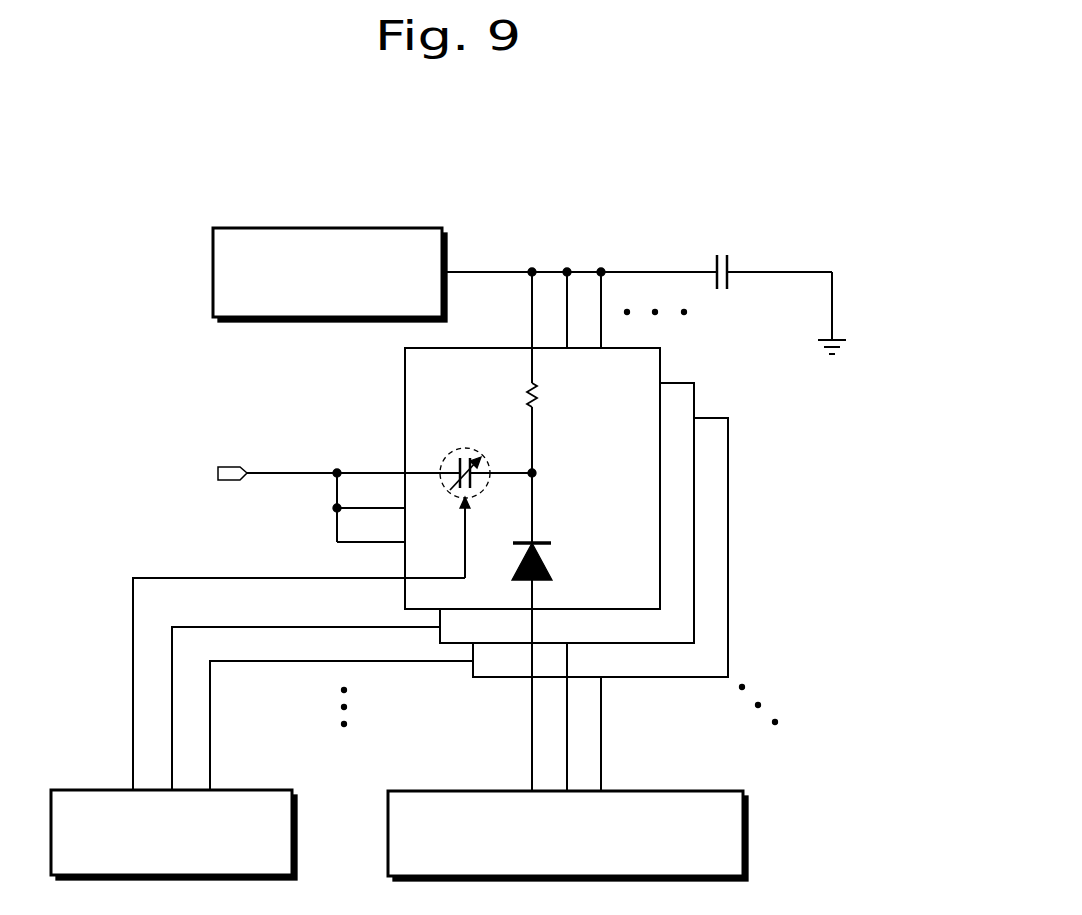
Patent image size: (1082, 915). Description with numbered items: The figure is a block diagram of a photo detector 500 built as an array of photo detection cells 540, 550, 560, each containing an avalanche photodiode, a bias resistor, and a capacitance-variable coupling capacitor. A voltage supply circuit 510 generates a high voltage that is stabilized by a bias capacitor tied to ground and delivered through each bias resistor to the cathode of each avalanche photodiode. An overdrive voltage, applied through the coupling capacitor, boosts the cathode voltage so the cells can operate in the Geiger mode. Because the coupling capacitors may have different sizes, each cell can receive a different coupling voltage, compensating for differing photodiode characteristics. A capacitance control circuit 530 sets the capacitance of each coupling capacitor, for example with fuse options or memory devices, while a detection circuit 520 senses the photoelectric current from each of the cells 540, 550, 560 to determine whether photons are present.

The photo detector 500 is at (847, 185).
The voltage supply circuit 510 is at (400, 228).
The detection circuit 520 is at (747, 833).
The capacitance control circuit 530 is at (243, 790).
The photo detection cell 540 is at (660, 494).
The photo detection cell 550 is at (694, 543).
The photo detection cell 560 is at (728, 593).